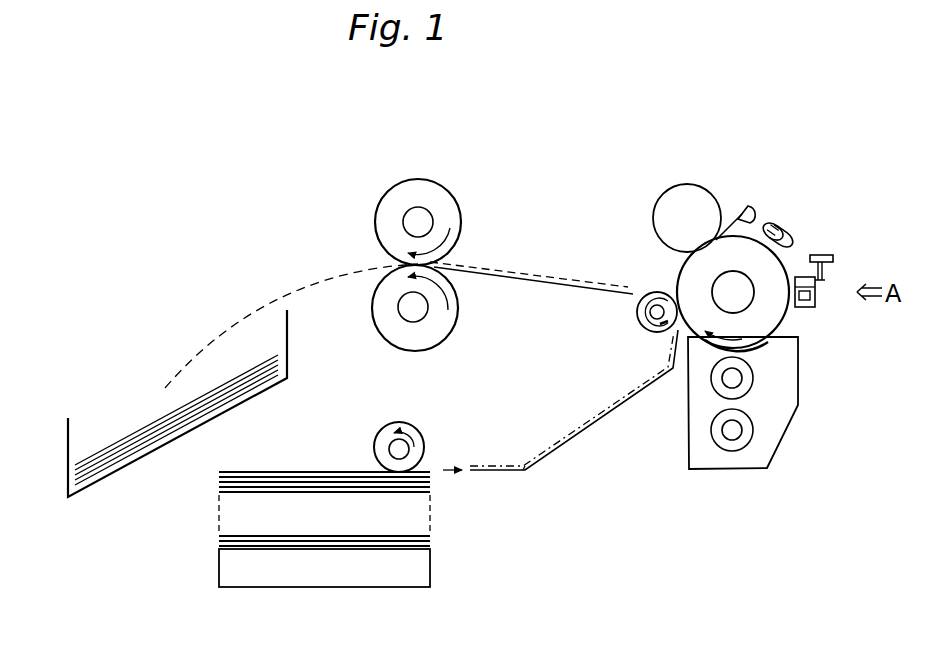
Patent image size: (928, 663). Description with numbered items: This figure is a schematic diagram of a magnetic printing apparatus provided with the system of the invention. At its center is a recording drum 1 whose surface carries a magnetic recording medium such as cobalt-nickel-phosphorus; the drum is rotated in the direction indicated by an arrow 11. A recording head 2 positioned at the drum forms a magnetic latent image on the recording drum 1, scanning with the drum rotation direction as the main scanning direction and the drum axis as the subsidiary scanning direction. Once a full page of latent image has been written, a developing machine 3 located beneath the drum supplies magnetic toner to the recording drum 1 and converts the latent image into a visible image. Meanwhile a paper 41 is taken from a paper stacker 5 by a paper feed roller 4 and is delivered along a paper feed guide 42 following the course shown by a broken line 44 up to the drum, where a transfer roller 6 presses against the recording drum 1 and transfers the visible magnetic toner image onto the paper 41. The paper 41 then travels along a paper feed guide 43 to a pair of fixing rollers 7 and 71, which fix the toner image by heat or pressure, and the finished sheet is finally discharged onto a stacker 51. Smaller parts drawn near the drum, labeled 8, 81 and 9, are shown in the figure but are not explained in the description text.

The recording drum 1 is at (783, 320).
The arrow 11 is at (742, 335).
The recording head 2 is at (816, 289).
The developing machine 3 is at (798, 380).
The paper feed roller 4 is at (409, 422).
The paper 41 is at (429, 469).
The paper feed guide 42 is at (543, 473).
The paper feed guide 43 is at (537, 280).
The broken line 44 is at (531, 462).
The paper stacker 5 is at (430, 570).
The stacker 51 is at (287, 355).
The transfer roller 6 is at (638, 329).
The fixing roller 7 is at (457, 188).
The fixing roller 71 is at (440, 350).
The cleaning blade 8 is at (745, 205).
The cleaning roller 81 is at (686, 184).
The discharge lamp 9 is at (789, 225).